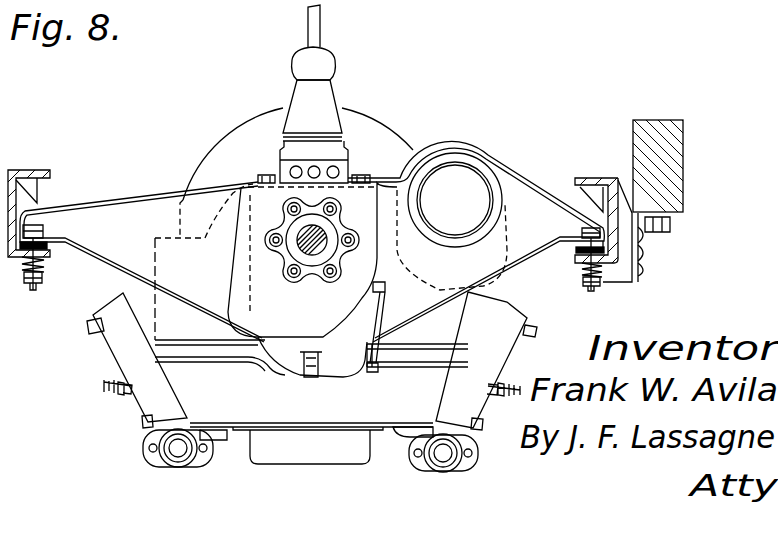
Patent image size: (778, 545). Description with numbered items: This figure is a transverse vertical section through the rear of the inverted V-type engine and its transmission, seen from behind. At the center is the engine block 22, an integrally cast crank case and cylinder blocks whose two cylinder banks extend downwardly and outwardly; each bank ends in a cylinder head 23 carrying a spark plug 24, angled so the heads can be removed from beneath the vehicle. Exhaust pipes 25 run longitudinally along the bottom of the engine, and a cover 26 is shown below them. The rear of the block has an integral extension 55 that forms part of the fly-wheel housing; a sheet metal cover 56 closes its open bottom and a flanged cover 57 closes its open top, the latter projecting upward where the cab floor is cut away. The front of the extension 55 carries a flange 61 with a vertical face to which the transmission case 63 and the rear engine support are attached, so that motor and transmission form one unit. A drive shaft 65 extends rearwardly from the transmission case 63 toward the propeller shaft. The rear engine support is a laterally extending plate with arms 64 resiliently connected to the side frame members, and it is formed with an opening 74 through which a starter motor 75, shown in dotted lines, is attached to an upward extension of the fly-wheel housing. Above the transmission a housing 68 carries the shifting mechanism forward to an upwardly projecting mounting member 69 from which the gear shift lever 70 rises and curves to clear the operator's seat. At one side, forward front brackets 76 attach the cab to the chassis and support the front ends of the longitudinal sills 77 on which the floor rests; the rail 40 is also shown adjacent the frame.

The gear shift lever 70 is at (321, 27).
The gear shift lever mounting member 69 is at (305, 88).
The housing 68 is at (297, 165).
The flanged cover 57 is at (373, 134).
The transmission case 63 is at (260, 266).
The drive shaft 65 is at (314, 252).
The opening 74 is at (470, 160).
The starter motor 75 is at (461, 230).
The arms 64 is at (113, 200).
The flange 61 is at (47, 284).
The channel rail 40 is at (588, 178).
The longitudinally extending sills 77 is at (680, 162).
The forward front brackets 76 is at (648, 250).
The engine block 22 is at (484, 300).
The cylinder heads 23 is at (117, 343).
The spark plugs 24 is at (118, 388).
The exhaust pipes 25 is at (146, 443).
The cover 26 is at (262, 460).
The sheet metal cover 56 is at (280, 362).
The integral extension 55 is at (433, 330).